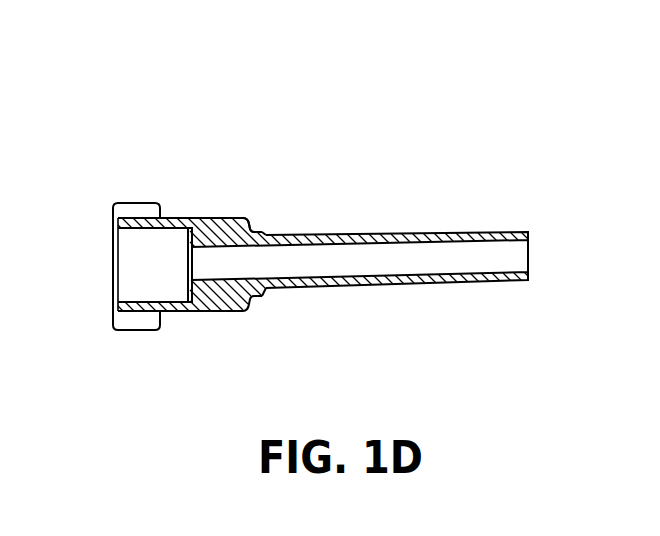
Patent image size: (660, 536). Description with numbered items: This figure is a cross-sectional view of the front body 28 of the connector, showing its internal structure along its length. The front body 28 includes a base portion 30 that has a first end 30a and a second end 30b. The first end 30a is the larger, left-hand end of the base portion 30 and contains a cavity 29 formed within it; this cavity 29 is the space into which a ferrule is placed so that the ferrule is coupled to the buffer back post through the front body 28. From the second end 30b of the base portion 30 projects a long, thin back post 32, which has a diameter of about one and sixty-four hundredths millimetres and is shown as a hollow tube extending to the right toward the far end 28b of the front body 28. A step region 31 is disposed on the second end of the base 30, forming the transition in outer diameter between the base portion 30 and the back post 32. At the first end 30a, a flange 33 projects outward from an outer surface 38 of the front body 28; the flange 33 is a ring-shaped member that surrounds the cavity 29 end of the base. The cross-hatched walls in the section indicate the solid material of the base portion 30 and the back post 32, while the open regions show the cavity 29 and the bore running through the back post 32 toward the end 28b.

The front body 28 is at (151, 141).
The distal end of connector 28b is at (538, 218).
The cavity 29 is at (162, 268).
The base portion 30 is at (205, 194).
The first end 30a is at (77, 272).
The second end 30b is at (223, 218).
The step region 31 is at (262, 232).
The back post 32 is at (374, 233).
The flange 33 is at (135, 208).
The outer surface 38 is at (200, 312).